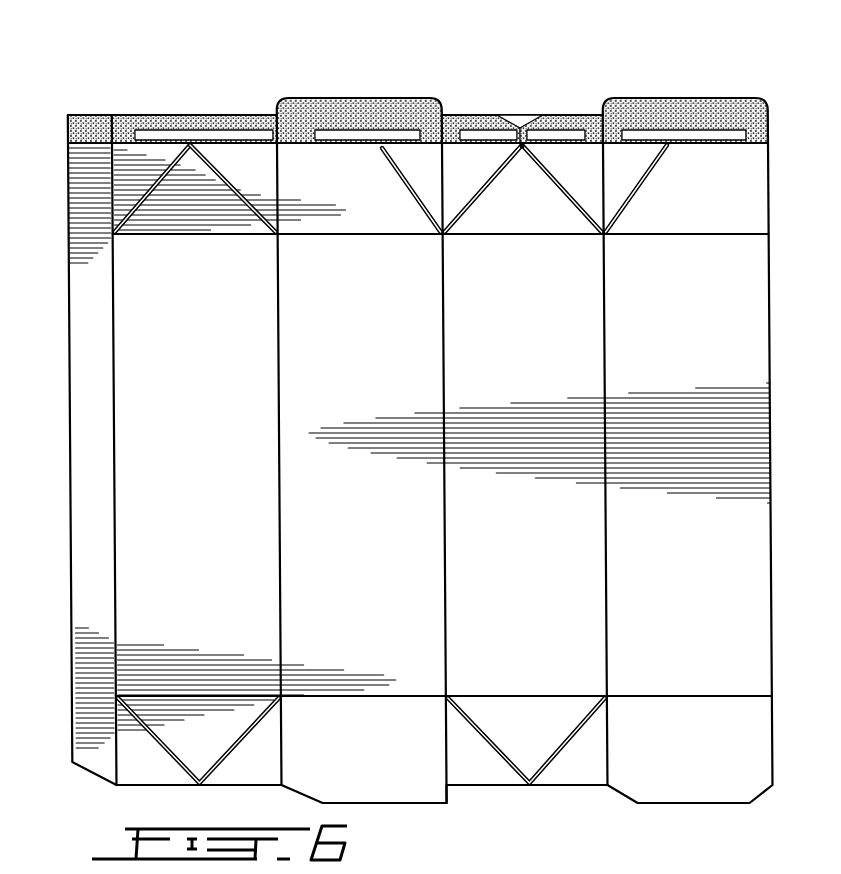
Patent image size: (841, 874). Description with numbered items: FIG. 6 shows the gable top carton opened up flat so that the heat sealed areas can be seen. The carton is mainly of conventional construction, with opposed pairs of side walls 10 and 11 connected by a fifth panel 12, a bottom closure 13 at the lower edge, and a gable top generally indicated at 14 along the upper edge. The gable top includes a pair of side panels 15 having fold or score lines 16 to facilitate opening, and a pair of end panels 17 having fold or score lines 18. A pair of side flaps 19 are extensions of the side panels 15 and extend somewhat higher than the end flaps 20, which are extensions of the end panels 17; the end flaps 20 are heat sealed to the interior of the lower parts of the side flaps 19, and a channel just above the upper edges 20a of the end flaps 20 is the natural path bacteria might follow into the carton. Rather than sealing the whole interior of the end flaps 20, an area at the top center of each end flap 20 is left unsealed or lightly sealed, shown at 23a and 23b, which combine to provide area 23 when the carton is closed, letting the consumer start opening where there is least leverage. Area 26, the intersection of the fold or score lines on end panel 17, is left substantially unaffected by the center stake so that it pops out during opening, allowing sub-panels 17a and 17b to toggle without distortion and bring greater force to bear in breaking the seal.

The side wall 10 is at (333, 483).
The side wall 11 is at (197, 467).
The fifth panel 12 is at (77, 210).
The bottom closure 13 is at (522, 798).
The gable top 14 is at (556, 100).
The side panel 15 is at (378, 212).
The fold or score line 16 is at (408, 182).
The end panel 17 is at (348, 169).
The sub-panel 17a is at (127, 158).
The sub-panel 17b is at (244, 155).
The fold or score line 18 is at (570, 193).
The side flap 19 is at (658, 98).
The end flap 20 is at (478, 115).
The upper edge of end flap 20a is at (190, 135).
The unsealed or lightly sealed area 23 is at (514, 115).
The unsealed or lightly sealed area 23a is at (386, 118).
The unsealed or lightly sealed area 23b is at (653, 117).
The intersection area 26 is at (520, 169).